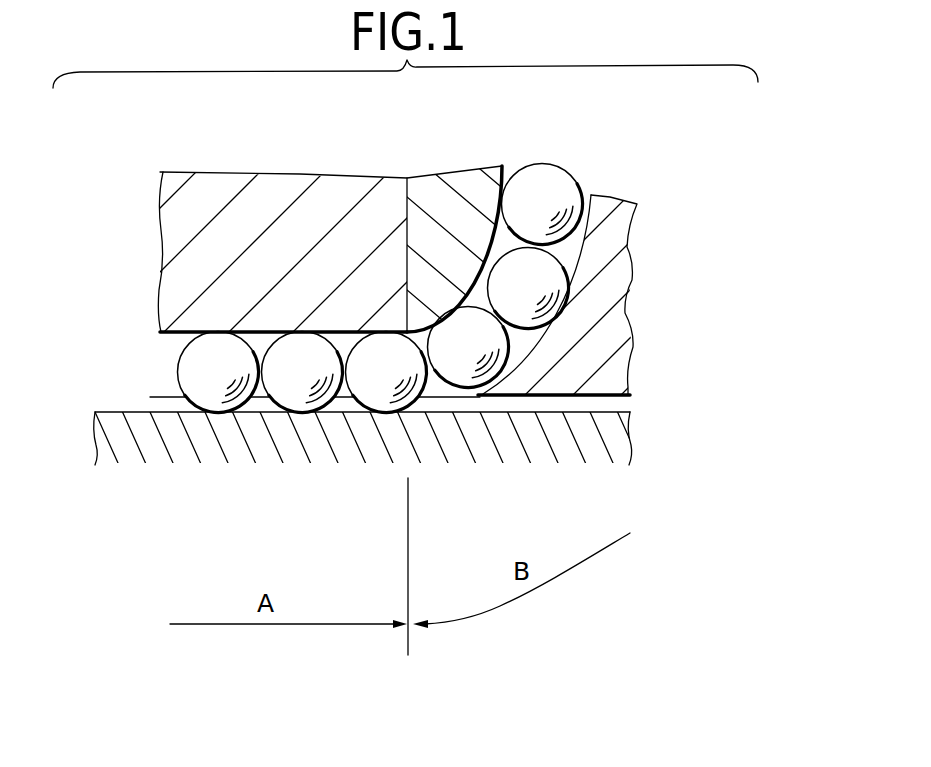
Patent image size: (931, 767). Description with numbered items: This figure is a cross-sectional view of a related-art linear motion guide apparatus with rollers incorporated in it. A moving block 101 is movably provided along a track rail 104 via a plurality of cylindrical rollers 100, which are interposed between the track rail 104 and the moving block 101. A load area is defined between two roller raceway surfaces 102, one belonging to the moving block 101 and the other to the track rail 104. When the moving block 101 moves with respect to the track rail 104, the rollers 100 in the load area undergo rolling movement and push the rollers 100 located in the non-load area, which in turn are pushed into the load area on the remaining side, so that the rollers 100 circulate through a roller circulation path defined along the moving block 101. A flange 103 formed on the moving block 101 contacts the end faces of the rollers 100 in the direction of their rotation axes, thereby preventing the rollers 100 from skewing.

The roller 100 is at (570, 188).
The moving block 101 is at (205, 189).
The roller raceway surface 102 is at (162, 334).
The flange 103 is at (258, 333).
The track rail 104 is at (612, 433).